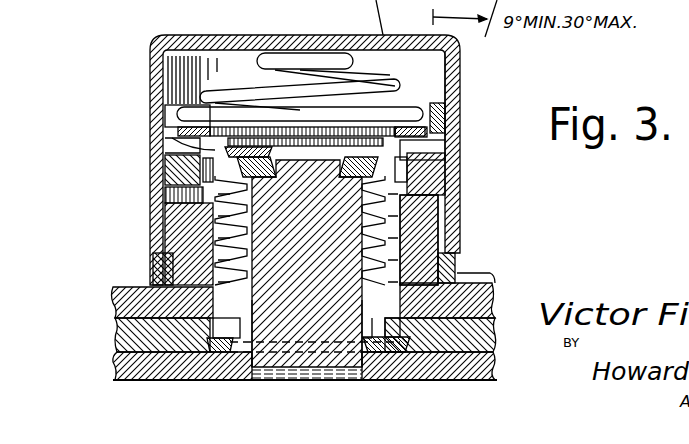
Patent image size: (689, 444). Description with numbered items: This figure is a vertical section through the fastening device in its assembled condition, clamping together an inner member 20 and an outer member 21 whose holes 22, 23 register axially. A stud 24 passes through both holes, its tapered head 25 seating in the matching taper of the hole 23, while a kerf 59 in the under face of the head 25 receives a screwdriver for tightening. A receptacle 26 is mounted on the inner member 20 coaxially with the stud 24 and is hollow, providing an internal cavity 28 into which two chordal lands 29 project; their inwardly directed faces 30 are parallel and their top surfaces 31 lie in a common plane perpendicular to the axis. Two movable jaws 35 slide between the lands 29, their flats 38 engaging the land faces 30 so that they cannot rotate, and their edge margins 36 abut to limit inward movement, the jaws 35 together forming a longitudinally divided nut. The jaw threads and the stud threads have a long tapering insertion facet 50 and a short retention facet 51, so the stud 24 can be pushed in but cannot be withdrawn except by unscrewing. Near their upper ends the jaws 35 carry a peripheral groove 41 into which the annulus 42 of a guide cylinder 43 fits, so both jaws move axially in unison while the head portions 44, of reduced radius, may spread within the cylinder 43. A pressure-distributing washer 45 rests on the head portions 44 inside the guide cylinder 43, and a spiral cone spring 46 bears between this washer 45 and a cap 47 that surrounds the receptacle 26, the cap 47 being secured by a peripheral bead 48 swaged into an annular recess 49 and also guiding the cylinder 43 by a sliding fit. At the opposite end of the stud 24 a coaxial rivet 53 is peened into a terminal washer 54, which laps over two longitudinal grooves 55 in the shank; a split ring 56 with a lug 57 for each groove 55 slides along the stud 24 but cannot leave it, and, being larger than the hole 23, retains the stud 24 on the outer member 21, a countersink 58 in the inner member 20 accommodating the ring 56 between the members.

The inner member 20 is at (115, 333).
The outer member 21 is at (115, 372).
The hole 22 is at (165, 379).
The hole 23 is at (210, 380).
The stud 24 is at (293, 382).
The head 25 is at (355, 381).
The receptacle 26 is at (433, 223).
The internal cavity 28 is at (213, 305).
The chordal lands 29 is at (213, 212).
The faces of lands 30 is at (213, 228).
The top surfaces of lands 31 is at (200, 180).
The movable jaw 35 is at (217, 206).
The edge margins 36 is at (217, 248).
The flats 38 is at (170, 264).
The peripheral groove 41 is at (410, 147).
The annulus 42 is at (455, 150).
The guide cylinder 43 is at (452, 107).
The head portions 44 is at (183, 140).
The pressure-distributing washer 45 is at (405, 130).
The spiral cone spring 46 is at (282, 57).
The cap 47 is at (184, 37).
The peripheral bead 48 is at (495, 273).
The annular recess 49 is at (455, 250).
The insertion facet 50 is at (213, 147).
The retention facet 51 is at (368, 353).
The rivet 53 is at (288, 150).
The terminal washer 54 is at (347, 150).
The longitudinal groove 55 is at (253, 352).
The split ring 56 is at (216, 353).
The lug 57 is at (233, 353).
The countersink 58 is at (400, 337).
The kerf 59 is at (290, 366).